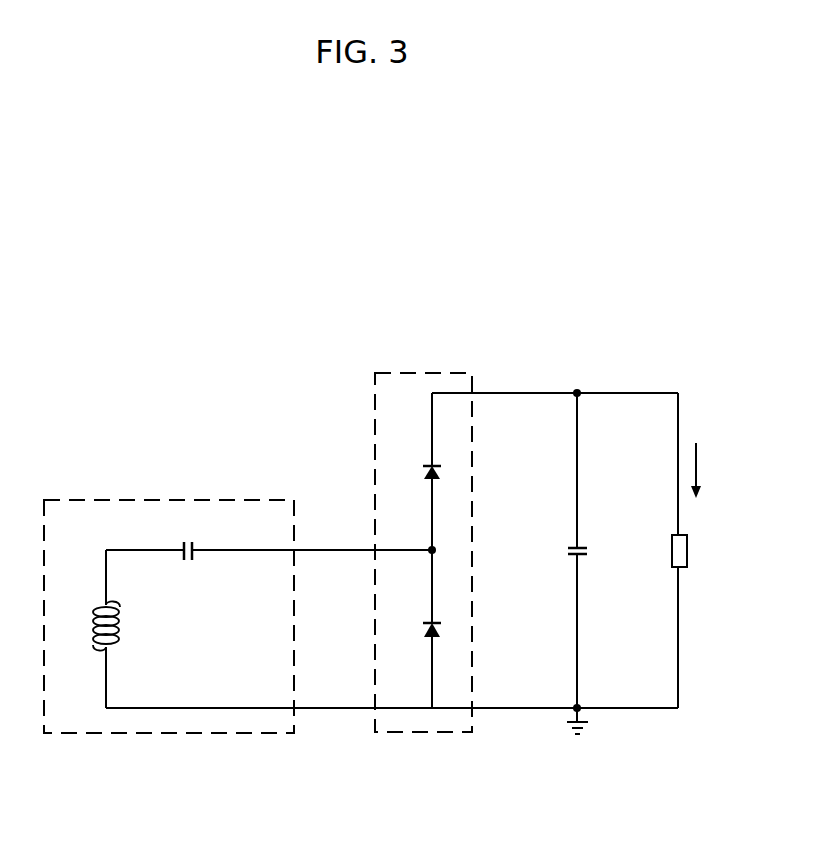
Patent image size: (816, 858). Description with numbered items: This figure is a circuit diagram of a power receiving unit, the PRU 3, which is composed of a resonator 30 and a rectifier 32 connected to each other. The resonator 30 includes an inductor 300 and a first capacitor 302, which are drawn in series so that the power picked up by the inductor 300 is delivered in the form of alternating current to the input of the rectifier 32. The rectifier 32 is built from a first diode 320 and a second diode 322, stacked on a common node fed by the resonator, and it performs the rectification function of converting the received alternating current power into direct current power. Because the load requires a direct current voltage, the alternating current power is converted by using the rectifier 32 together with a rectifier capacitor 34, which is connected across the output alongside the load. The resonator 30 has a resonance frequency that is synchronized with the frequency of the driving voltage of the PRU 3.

The PRU 3 is at (425, 264).
The resonator 30 is at (173, 500).
The inductor Lrx 300 is at (95, 648).
The first capacitor Cs 302 is at (194, 549).
The rectifier 32 is at (428, 373).
The diode D1 320 is at (440, 473).
The diode D2 322 is at (440, 632).
The rectifier capacitor CRECT 34 is at (585, 543).